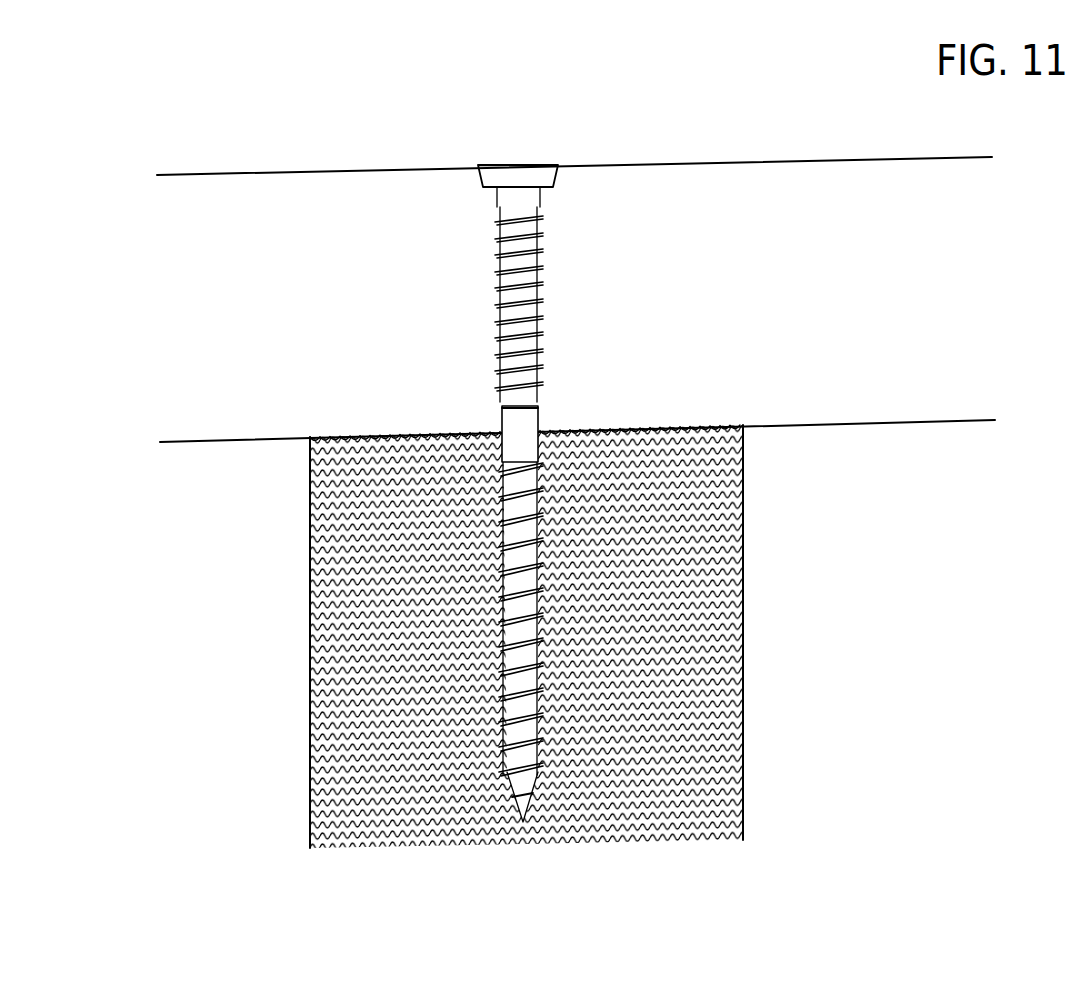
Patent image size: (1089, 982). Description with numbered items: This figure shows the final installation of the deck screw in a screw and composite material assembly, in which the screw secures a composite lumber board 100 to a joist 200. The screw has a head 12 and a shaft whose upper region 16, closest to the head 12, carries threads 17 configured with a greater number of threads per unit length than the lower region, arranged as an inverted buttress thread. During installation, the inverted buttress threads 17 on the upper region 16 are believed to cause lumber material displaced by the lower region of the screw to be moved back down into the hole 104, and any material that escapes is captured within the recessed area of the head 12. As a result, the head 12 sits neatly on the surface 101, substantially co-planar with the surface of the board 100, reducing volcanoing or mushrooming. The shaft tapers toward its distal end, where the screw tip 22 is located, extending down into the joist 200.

The composite lumber board 100 is at (265, 205).
The surface 101 is at (612, 162).
The head 12 is at (495, 173).
The upper region 16 is at (543, 295).
The threads 17 is at (495, 308).
The hole 104 is at (548, 413).
The joist 200 is at (310, 635).
The screw tip 22 is at (523, 822).